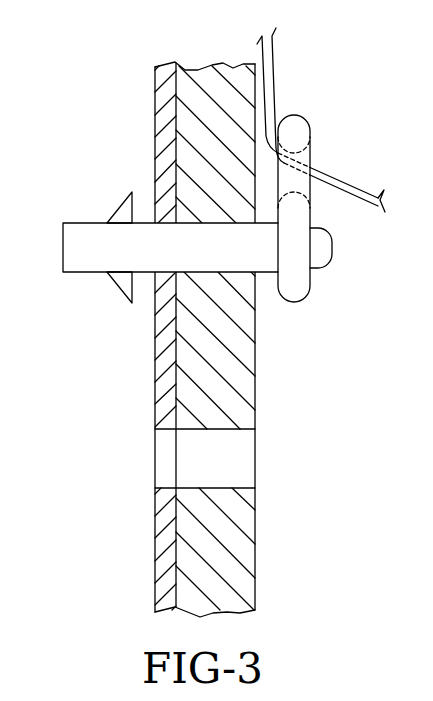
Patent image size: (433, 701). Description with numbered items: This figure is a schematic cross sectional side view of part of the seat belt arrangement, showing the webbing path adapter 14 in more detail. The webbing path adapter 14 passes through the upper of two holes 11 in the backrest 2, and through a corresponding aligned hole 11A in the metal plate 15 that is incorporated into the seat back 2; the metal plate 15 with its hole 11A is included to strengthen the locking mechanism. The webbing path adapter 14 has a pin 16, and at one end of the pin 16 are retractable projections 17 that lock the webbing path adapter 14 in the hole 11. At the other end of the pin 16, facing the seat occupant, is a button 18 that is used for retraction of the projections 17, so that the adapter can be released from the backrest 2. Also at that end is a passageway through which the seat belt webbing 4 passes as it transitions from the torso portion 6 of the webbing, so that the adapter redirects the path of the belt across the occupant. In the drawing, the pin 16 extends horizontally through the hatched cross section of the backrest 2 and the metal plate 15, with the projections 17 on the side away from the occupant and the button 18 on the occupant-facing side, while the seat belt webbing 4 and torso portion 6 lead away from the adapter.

The backrest 2 is at (257, 387).
The seat belt webbing 4 is at (292, 53).
The torso portion 6 is at (333, 173).
The hole 11 is at (225, 430).
The hole 11A is at (162, 262).
The webbing path adapter 14 is at (308, 121).
The metal plate 15 is at (165, 363).
The pin 16 is at (107, 252).
The retractable projections 17 is at (118, 205).
The button 18 is at (330, 248).